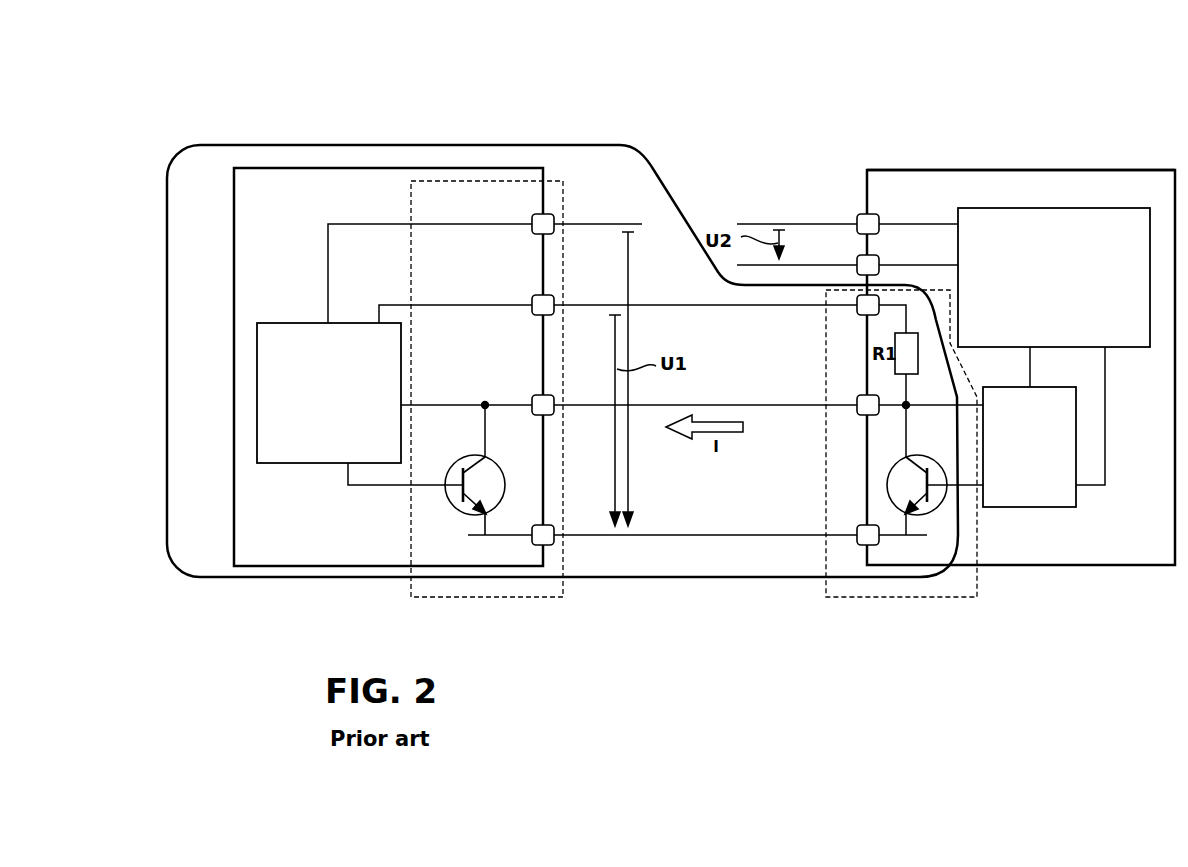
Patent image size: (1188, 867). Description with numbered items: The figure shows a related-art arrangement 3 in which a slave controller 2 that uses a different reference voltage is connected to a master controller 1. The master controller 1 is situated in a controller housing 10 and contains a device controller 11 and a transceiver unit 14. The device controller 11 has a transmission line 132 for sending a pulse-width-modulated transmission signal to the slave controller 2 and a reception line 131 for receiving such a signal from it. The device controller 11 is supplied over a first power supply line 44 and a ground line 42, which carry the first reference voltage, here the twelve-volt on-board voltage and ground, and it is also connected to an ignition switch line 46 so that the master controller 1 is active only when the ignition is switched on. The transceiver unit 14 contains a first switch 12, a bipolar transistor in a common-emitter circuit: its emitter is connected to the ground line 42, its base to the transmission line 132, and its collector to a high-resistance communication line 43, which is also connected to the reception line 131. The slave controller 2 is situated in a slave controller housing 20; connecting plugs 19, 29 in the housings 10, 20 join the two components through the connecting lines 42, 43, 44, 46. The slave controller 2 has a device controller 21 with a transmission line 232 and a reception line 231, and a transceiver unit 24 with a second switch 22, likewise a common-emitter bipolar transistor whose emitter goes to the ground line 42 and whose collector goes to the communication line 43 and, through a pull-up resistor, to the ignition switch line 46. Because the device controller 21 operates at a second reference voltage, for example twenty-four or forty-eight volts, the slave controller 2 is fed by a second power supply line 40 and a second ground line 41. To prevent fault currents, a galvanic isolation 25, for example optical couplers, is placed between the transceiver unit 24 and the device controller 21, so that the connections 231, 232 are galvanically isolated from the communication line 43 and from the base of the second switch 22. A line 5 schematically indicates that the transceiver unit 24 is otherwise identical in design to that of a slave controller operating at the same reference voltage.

The master controller 1 is at (264, 258).
The slave controller 2 is at (1117, 536).
The arrangement 3 is at (482, 96).
The line 5 is at (692, 580).
The controller housing 10 is at (308, 145).
The device controller 11 is at (315, 386).
The first switch 12 is at (452, 504).
The transceiver unit 14 is at (512, 588).
The connecting plug 19 is at (531, 219).
The slave controller housing 20 is at (1085, 170).
The device controller 21 is at (1041, 278).
The second switch 22 is at (941, 476).
The transceiver unit 24 is at (895, 588).
The galvanic isolation 25 is at (1016, 456).
The connecting plug 29 is at (880, 218).
The second power supply line 40 is at (806, 222).
The second ground line 41 is at (800, 263).
The ground line 42 is at (590, 533).
The communication line 43 is at (590, 403).
The first power supply line 44 is at (590, 222).
The ignition switch line 46 is at (590, 303).
The reception line 131 is at (438, 403).
The transmission line 132 is at (373, 487).
The reception line 231 is at (1040, 367).
The transmission line 232 is at (1110, 367).